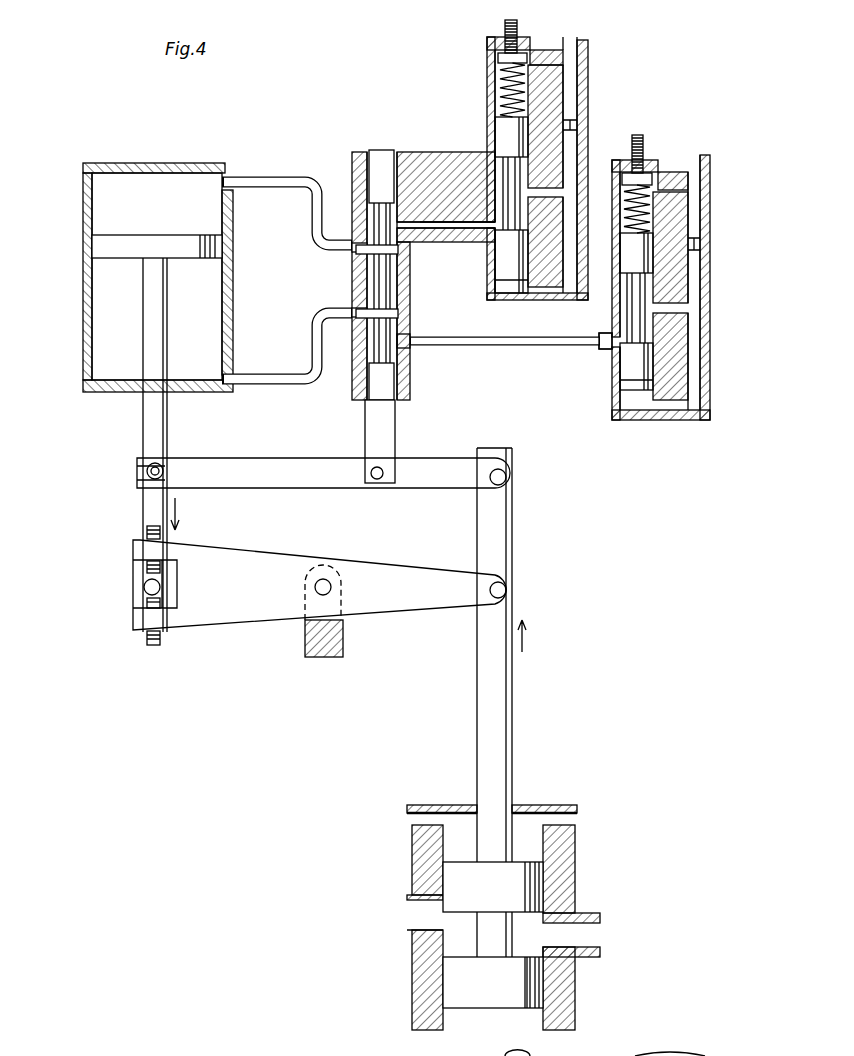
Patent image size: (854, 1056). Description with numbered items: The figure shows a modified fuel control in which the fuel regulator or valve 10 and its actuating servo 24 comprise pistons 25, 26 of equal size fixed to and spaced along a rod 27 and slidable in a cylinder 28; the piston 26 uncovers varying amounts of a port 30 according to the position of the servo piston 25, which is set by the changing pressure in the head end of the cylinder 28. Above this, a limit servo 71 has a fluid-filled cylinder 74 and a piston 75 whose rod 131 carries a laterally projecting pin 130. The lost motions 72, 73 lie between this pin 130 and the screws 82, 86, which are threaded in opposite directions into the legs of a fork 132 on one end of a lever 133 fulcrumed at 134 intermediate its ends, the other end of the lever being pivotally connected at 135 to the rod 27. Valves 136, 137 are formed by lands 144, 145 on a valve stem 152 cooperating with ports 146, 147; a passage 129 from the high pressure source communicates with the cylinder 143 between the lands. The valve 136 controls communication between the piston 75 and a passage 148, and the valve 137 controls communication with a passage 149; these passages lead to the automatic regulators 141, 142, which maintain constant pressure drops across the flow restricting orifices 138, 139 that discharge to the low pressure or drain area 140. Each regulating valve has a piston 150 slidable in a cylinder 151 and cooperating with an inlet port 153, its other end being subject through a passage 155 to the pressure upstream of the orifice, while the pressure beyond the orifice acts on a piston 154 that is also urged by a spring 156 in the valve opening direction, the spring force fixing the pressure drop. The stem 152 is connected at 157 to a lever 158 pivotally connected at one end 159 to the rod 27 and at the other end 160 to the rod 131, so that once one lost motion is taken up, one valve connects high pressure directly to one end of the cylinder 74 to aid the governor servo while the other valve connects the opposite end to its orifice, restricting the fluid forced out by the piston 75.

The limit servo 71 is at (55, 339).
The cylinder 74 is at (92, 305).
The piston 75 is at (92, 248).
The rod 131 is at (145, 431).
The valve 136 is at (354, 235).
The valve 137 is at (356, 331).
The passage 129 is at (352, 272).
The port 146 is at (352, 251).
The port 147 is at (352, 309).
The cylinder 143 is at (399, 280).
The land 145 is at (399, 248).
The land 144 is at (399, 313).
The automatic regulator 141 is at (486, 200).
The passage 148 is at (459, 226).
The valve stem 152 is at (396, 413).
The passage 149 is at (488, 347).
The automatic regulator 142 is at (609, 332).
The flow restricting orifice 138 is at (583, 118).
The flow restricting orifice 139 is at (702, 245).
The low pressure or drain area 140 is at (570, 42).
The passage 155 is at (577, 172).
The cylinder 151 is at (530, 222).
The spring 156 is at (500, 100).
The piston 154 is at (496, 136).
The inlet port 153 is at (497, 264).
The piston 150 is at (494, 296).
The lever 158 is at (287, 497).
The pivotal connection 160 is at (141, 474).
The connection 157 is at (378, 481).
The pivotal connection 159 is at (508, 480).
The lever 133 is at (279, 627).
The fork 132 is at (195, 636).
The pin 130 is at (165, 588).
The pivotal connection 135 is at (510, 590).
The fulcrum 134 is at (335, 587).
The screw 82 is at (147, 534).
The lost motion 73 is at (147, 576).
The lost motion 72 is at (147, 604).
The screw 86 is at (147, 641).
The rod 27 is at (513, 691).
The actuating servo 24 is at (408, 847).
The fuel regulator or valve 10 is at (429, 887).
The port 30 is at (440, 931).
The piston 26 is at (540, 887).
The servo piston 25 is at (545, 976).
The cylinder 28 is at (547, 996).